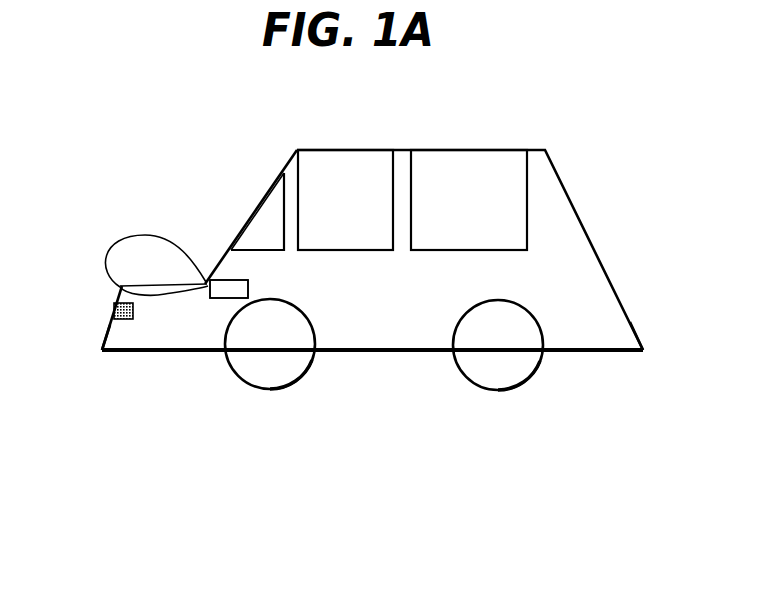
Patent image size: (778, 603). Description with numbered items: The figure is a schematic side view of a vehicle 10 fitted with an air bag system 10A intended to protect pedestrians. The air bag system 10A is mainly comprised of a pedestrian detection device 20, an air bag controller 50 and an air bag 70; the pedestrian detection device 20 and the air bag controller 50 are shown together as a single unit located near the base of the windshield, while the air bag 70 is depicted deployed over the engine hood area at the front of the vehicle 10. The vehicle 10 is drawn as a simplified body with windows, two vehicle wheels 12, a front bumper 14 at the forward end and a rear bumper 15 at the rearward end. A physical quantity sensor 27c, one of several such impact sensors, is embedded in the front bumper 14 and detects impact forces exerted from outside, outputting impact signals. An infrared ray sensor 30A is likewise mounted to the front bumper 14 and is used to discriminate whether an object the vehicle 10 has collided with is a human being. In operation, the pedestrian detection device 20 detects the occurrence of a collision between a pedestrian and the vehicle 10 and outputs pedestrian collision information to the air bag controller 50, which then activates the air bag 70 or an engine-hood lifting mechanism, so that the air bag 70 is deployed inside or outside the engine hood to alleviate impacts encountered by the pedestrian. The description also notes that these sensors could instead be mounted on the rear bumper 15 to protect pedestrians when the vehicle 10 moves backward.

The vehicle 10 is at (568, 190).
The air bag system 10A is at (211, 216).
The vehicle wheel 12 is at (313, 370).
The front bumper 14 is at (103, 335).
The rear bumper 15 is at (633, 322).
The pedestrian detection device 20 is at (249, 288).
The air bag controller 50 is at (229, 289).
The physical quantity sensor 27c is at (117, 321).
The infrared ray sensor 30A is at (113, 310).
The air bag 70 is at (155, 233).